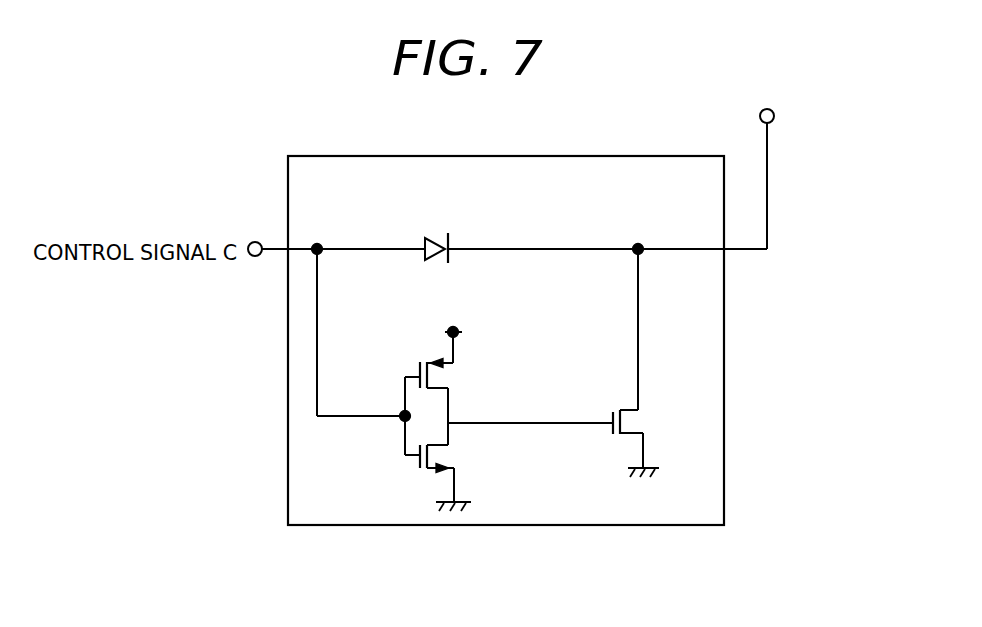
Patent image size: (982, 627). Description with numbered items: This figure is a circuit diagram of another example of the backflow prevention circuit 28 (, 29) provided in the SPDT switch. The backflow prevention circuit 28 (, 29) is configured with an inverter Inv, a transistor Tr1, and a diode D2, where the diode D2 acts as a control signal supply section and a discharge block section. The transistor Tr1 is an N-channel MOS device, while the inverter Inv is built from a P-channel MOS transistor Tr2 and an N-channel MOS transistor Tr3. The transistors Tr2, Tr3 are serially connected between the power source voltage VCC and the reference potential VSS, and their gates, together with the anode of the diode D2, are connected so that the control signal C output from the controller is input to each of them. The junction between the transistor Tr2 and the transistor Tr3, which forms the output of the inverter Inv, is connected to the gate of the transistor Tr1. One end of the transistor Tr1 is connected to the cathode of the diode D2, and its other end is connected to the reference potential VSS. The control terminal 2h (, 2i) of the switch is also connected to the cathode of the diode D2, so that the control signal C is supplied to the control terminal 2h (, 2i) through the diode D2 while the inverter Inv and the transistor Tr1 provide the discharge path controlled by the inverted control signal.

The diode D2 is at (435, 240).
The transistor Tr1 is at (644, 431).
The P-channel MOS transistor Tr2 is at (453, 361).
The N-channel MOS transistor Tr3 is at (455, 468).
The control terminal 2h is at (829, 178).
The control terminal 2i is at (775, 116).
The backflow prevention circuit 28 is at (570, 340).
The backflow prevention circuit 29 is at (724, 458).
The inverter Inv is at (560, 375).